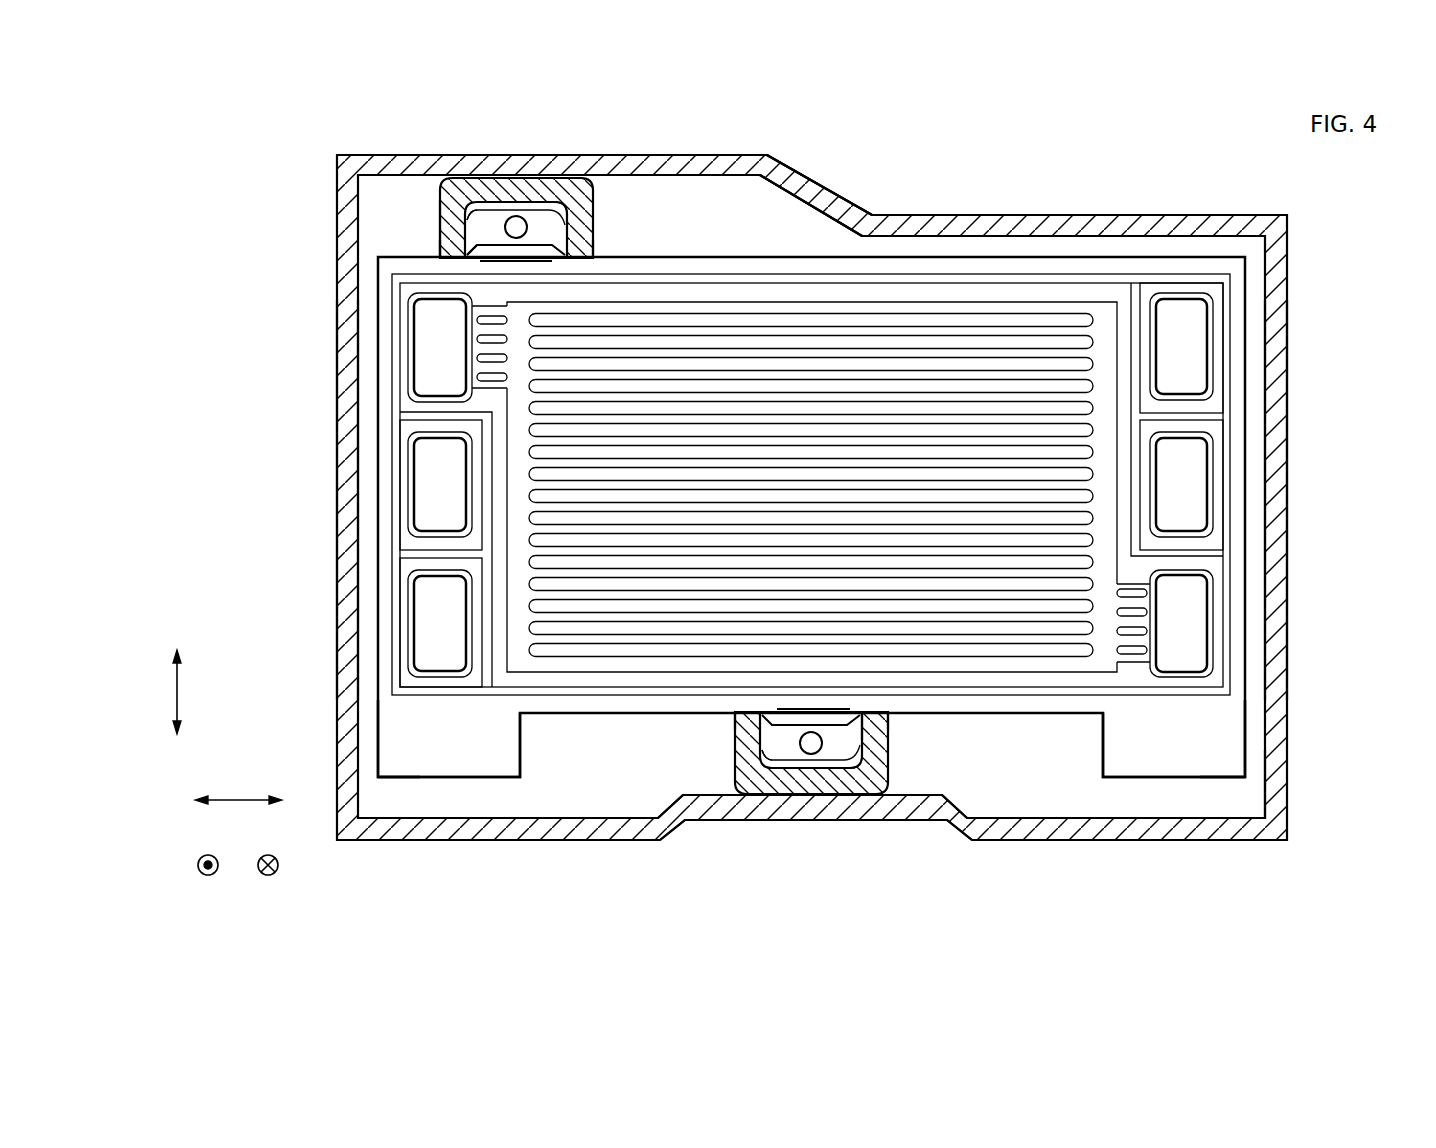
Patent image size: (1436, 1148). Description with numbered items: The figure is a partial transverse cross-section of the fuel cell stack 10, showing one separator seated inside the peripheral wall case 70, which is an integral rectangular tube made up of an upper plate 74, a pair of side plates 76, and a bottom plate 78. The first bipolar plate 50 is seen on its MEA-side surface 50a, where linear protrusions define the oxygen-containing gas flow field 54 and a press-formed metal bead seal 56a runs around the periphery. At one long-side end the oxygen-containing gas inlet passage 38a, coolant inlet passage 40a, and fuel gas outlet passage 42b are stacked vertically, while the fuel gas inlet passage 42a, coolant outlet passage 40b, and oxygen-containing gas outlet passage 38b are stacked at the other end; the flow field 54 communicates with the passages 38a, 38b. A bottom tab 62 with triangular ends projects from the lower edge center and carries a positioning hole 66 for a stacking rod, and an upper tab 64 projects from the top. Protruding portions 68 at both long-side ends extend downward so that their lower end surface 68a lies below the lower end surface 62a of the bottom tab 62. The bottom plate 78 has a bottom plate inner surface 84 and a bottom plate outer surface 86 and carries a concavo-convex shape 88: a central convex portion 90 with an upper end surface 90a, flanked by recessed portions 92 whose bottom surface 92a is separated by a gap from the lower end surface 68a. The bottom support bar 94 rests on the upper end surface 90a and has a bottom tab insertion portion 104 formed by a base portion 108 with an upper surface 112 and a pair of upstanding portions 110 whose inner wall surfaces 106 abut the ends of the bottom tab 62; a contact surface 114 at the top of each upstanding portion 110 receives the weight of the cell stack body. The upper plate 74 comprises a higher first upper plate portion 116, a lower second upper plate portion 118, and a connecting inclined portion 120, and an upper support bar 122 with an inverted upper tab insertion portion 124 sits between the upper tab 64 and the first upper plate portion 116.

The fuel cell stack 10 is at (1405, 194).
The oxygen-containing gas inlet passage 38a is at (432, 368).
The oxygen-containing gas outlet passage 38b is at (1193, 638).
The coolant inlet passage 40a is at (432, 483).
The coolant outlet passage 40b is at (1193, 485).
The fuel gas inlet passage 42a is at (1193, 347).
The fuel gas outlet passage 42b is at (432, 617).
The first bipolar plate 50 is at (737, 254).
The MEA-side surface 50a is at (780, 272).
The oxygen-containing gas flow field 54 is at (1024, 632).
The metal bead seal 56a is at (1028, 281).
The bottom tab 62 is at (842, 748).
The lower end surface 62a is at (833, 764).
The upper tab 64 is at (447, 226).
The positioning hole 66 is at (515, 216).
The protruding portion 68 is at (447, 761).
The lower end surface 68a is at (392, 781).
The peripheral wall case 70 is at (1290, 571).
The upper plate 74 is at (985, 130).
The side plate 76 is at (350, 410).
The bottom plate 78 is at (1165, 841).
The bottom plate inner surface 84 is at (562, 817).
The bottom plate outer surface 86 is at (575, 841).
The concavo-convex shape 88 is at (678, 832).
The convex portion 90 is at (698, 795).
The upper end surface 90a is at (917, 795).
The recessed portion 92 is at (588, 817).
The bottom surface 92a is at (1240, 818).
The bottom support bar 94 is at (727, 784).
The bottom tab insertion portion 104 is at (862, 725).
The inner wall surface 106 is at (545, 199).
The base portion 108 is at (527, 190).
The upstanding portion 110 is at (460, 213).
The upper surface 112 is at (480, 208).
The contact surface 114 is at (452, 255).
The first upper plate portion 116 is at (735, 153).
The second upper plate portion 118 is at (958, 215).
The inclined portion 120 is at (836, 191).
The upper support bar 122 is at (428, 236).
The upper tab insertion portion 124 is at (448, 247).